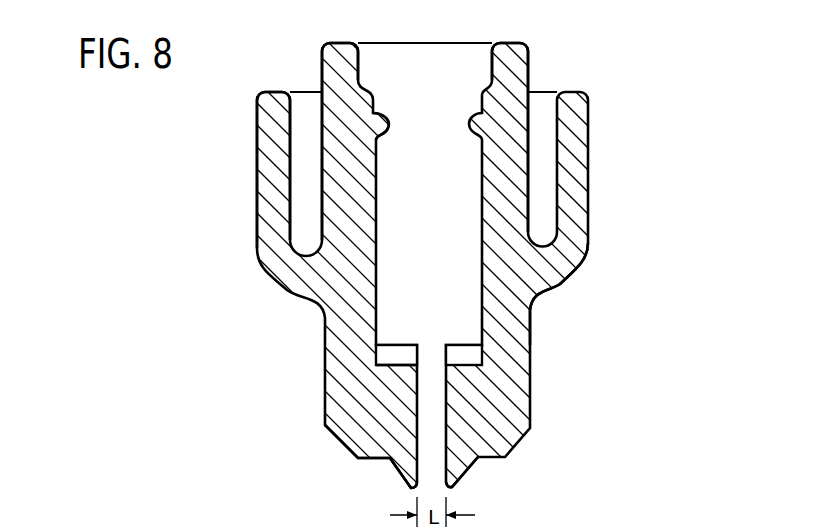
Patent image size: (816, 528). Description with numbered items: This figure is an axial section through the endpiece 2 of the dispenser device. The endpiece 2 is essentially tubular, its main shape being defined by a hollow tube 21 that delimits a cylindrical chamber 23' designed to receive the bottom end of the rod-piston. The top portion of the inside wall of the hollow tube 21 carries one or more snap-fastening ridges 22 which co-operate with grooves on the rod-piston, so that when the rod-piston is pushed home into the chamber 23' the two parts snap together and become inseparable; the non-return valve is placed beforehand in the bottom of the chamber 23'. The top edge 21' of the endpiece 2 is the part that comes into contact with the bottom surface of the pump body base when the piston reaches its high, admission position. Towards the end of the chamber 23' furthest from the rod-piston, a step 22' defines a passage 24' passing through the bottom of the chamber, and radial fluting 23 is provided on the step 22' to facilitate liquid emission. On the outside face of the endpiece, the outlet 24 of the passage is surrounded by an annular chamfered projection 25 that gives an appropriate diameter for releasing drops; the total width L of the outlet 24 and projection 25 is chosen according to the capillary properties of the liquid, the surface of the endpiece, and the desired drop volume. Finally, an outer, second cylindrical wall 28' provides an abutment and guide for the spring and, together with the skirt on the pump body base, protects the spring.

The endpiece 2 is at (597, 137).
The hollow tube 21 is at (566, 137).
The top edge 21' is at (331, 122).
The snap-fastening ridge 22 is at (399, 72).
The step 22' is at (347, 397).
The radial fluting 23 is at (344, 354).
The cylindrical chamber 23' is at (526, 294).
The outlet 24 is at (403, 477).
The passage 24' is at (378, 461).
The projection 25 is at (445, 478).
The outer second cylindrical wall 28' is at (250, 170).